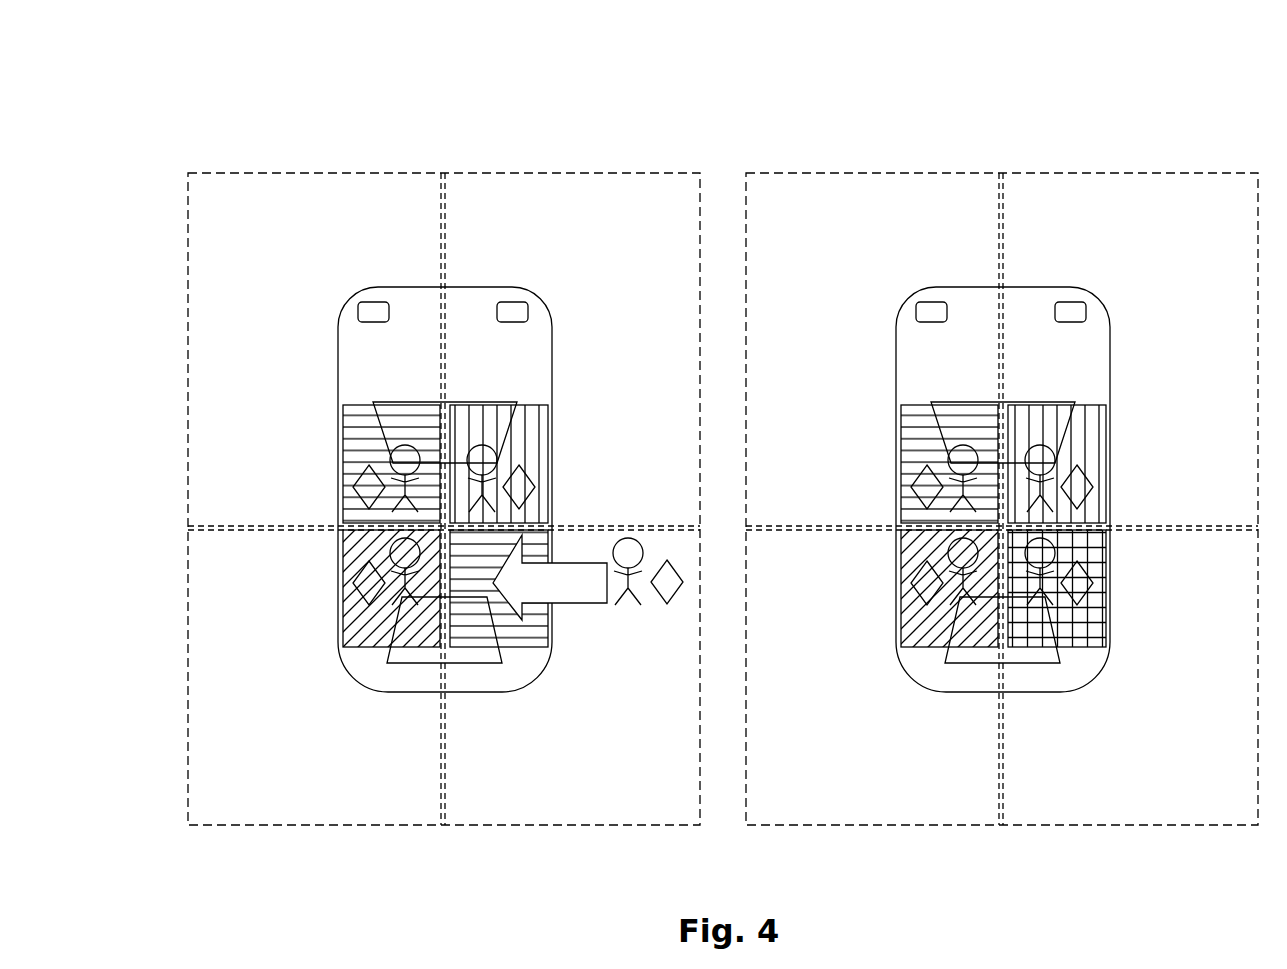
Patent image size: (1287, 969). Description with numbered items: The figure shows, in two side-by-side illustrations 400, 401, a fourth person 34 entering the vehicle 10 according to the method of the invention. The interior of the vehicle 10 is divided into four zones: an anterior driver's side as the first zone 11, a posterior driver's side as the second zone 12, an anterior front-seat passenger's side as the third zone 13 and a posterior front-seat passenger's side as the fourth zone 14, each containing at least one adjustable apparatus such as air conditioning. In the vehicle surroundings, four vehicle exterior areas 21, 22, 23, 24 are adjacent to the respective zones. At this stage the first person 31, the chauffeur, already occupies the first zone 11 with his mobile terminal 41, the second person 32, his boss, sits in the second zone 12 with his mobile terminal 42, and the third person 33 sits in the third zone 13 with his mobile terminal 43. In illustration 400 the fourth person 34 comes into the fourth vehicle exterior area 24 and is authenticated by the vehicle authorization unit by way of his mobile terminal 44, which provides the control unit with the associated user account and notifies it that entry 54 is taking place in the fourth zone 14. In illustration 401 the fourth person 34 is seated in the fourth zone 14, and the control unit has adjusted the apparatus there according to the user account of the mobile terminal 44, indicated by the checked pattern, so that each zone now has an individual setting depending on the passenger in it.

The illustration of fourth person coming into fourth vehicle exterior area 400 is at (230, 147).
The illustration of fourth person in fourth zone 401 is at (788, 147).
The vehicle 10 is at (486, 280).
The first zone 11 is at (345, 400).
The second zone 12 is at (367, 656).
The third zone 13 is at (542, 400).
The fourth zone 14 is at (521, 656).
The first vehicle exterior area 21 is at (233, 208).
The second vehicle exterior area 22 is at (233, 810).
The third vehicle exterior area 23 is at (683, 208).
The fourth vehicle exterior area 24 is at (683, 810).
The first person 31 is at (396, 457).
The second person 32 is at (396, 553).
The third person 33 is at (491, 457).
The fourth person 34 is at (637, 546).
The first mobile terminal 41 is at (357, 485).
The second mobile terminal 42 is at (357, 589).
The third mobile terminal 43 is at (531, 494).
The fourth mobile terminal 44 is at (668, 586).
The fourth entry 54 is at (586, 597).